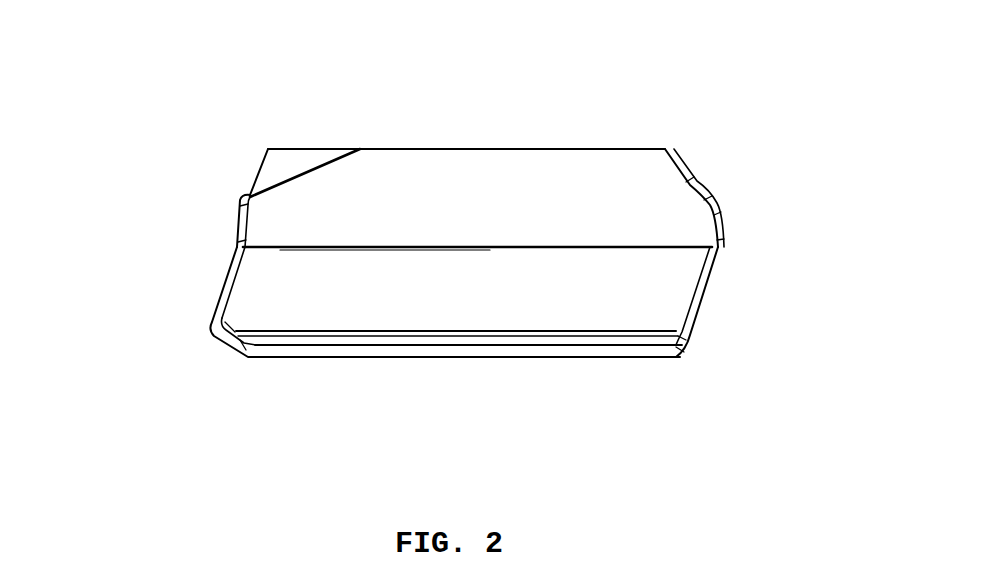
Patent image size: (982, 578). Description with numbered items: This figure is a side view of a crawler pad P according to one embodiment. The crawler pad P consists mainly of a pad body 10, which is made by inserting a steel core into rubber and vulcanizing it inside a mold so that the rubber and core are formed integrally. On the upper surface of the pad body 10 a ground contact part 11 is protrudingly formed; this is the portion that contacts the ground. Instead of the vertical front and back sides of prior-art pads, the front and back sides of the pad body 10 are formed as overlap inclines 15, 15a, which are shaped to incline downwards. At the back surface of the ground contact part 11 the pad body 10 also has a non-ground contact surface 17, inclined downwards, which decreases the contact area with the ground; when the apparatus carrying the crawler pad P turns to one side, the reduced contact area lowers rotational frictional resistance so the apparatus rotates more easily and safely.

The pad body 10 is at (462, 300).
The ground contact part 11 is at (545, 148).
The overlap incline 15 is at (705, 297).
The overlap incline 15a is at (220, 290).
The non-ground contact surface 17 is at (307, 160).
The crawler pad P is at (471, 125).